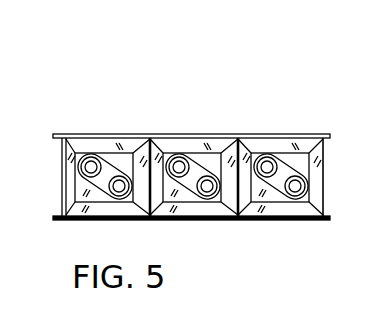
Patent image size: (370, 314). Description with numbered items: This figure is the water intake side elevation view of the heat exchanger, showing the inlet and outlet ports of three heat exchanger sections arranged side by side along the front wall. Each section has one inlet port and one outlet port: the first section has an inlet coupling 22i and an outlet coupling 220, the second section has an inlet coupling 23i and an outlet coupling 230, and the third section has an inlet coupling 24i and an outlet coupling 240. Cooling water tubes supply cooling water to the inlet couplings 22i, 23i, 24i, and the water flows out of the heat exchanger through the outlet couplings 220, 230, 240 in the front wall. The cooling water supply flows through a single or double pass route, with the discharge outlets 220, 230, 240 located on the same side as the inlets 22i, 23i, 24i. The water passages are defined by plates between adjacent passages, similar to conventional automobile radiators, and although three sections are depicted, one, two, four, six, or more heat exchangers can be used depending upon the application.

The outlet coupling 220 is at (84, 117).
The inlet coupling 22i is at (119, 191).
The outlet coupling 230 is at (171, 117).
The inlet coupling 23i is at (206, 191).
The outlet coupling 240 is at (258, 117).
The inlet coupling 24i is at (294, 191).